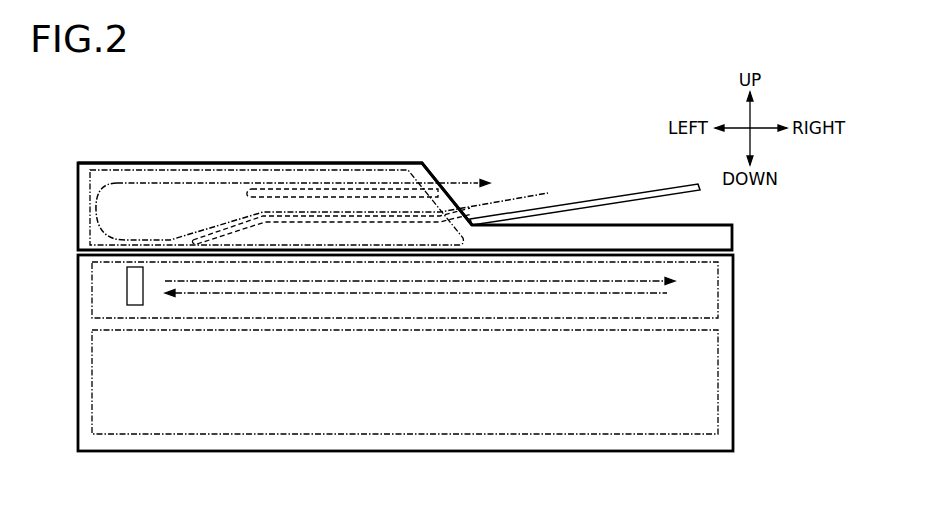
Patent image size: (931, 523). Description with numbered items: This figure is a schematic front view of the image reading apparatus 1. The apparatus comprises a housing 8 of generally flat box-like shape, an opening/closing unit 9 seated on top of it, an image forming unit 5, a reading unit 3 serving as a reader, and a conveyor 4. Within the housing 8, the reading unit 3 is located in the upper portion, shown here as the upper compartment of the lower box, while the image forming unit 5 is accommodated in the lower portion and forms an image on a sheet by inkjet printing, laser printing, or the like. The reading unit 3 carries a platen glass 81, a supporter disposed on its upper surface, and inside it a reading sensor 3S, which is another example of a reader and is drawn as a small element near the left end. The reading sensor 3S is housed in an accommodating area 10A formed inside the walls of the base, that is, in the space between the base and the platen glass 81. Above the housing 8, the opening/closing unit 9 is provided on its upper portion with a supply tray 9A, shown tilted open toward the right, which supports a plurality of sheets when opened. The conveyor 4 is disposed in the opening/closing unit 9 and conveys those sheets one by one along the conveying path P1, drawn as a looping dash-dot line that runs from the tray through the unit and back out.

The image reading apparatus 1 is at (492, 125).
The reading unit 3 is at (697, 307).
The reading sensor 3S is at (137, 285).
The conveyor 4 is at (330, 164).
The image forming unit 5 is at (701, 409).
The housing 8 is at (78, 383).
The platen glass 81 is at (695, 264).
The opening/closing unit 9 is at (78, 166).
The supply tray 9A is at (661, 188).
The accommodating area 10A is at (380, 300).
The conveying path P1 is at (204, 183).